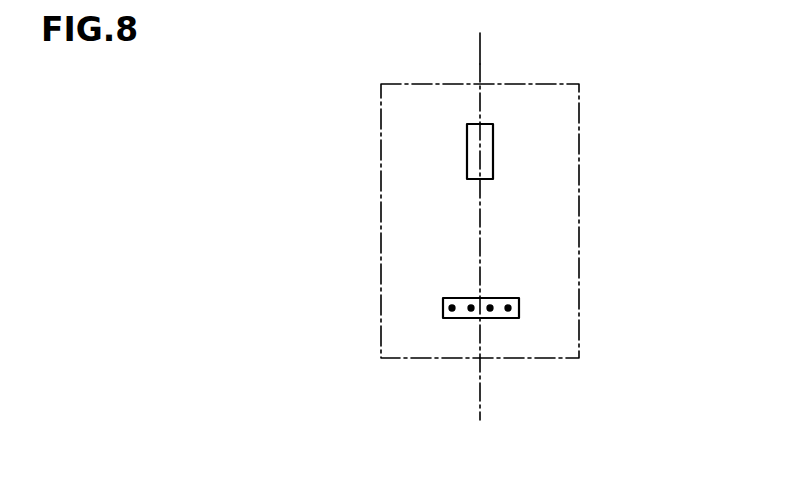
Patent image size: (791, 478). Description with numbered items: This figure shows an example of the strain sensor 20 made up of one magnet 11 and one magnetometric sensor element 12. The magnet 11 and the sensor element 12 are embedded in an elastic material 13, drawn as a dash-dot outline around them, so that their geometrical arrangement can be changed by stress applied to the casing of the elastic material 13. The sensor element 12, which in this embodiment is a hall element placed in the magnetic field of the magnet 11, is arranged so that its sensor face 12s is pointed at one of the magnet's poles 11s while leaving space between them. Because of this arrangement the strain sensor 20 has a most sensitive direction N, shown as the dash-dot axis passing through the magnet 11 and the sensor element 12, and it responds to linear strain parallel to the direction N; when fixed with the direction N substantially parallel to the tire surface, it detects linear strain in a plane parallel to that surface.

The most sensitive direction N is at (480, 57).
The strain sensor 20 is at (606, 118).
The magnet 11 is at (496, 150).
The magnet's pole 11s is at (481, 180).
The elastic material 13 is at (579, 243).
The sensor face 12s is at (505, 298).
The magnetometric sensor element 12 is at (523, 320).